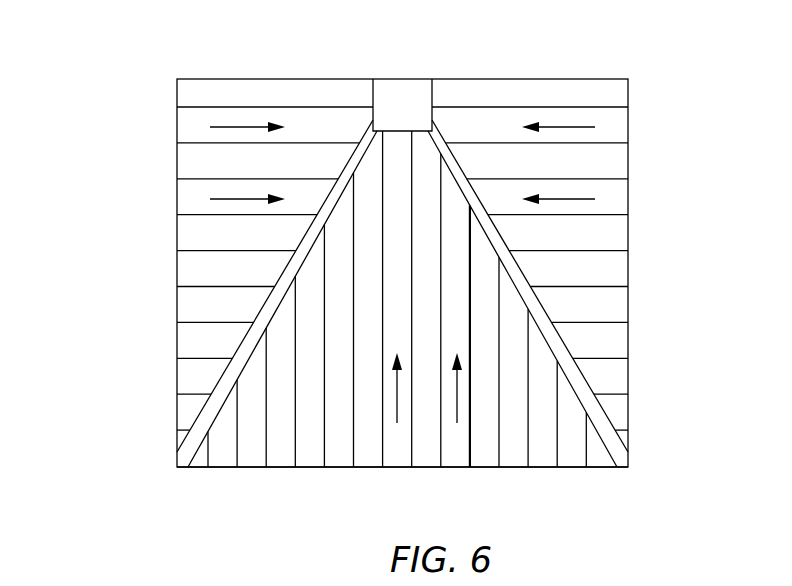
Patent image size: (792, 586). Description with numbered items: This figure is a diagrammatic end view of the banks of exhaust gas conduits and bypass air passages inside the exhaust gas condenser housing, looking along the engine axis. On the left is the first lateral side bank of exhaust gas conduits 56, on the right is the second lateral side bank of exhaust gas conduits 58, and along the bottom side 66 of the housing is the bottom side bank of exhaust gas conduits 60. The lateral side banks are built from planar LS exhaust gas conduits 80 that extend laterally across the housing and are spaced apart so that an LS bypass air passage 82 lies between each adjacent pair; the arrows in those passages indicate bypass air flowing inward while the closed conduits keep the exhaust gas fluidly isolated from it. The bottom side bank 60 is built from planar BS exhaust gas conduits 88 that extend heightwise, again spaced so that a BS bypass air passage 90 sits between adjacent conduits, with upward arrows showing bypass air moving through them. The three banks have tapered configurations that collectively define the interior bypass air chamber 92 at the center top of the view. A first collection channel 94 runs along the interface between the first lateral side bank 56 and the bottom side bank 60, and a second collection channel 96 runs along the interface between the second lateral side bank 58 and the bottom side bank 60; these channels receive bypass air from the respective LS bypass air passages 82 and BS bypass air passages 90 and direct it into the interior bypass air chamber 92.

The first lateral side bank of exhaust gas conduits 56 is at (136, 251).
The second lateral side bank of exhaust gas conduits 58 is at (659, 240).
The bottom side bank of exhaust gas conduits 60 is at (331, 486).
The bottom side 66 is at (527, 468).
The LS exhaust gas conduit 80 is at (177, 93).
The LS bypass air passage 82 is at (177, 121).
The BS exhaust gas conduit 88 is at (368, 468).
The BS bypass air passage 90 is at (397, 470).
The interior bypass air chamber 92 is at (398, 98).
The first collection channel 94 is at (204, 422).
The second collection channel 96 is at (602, 423).